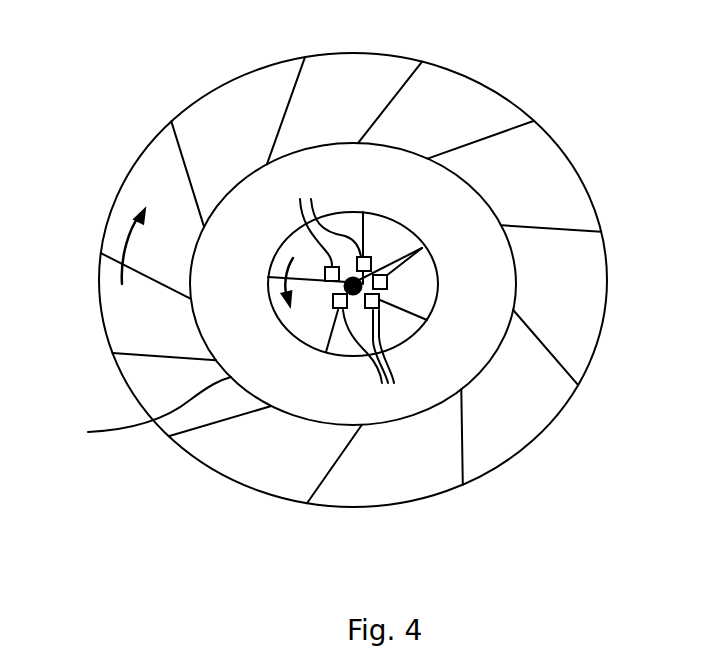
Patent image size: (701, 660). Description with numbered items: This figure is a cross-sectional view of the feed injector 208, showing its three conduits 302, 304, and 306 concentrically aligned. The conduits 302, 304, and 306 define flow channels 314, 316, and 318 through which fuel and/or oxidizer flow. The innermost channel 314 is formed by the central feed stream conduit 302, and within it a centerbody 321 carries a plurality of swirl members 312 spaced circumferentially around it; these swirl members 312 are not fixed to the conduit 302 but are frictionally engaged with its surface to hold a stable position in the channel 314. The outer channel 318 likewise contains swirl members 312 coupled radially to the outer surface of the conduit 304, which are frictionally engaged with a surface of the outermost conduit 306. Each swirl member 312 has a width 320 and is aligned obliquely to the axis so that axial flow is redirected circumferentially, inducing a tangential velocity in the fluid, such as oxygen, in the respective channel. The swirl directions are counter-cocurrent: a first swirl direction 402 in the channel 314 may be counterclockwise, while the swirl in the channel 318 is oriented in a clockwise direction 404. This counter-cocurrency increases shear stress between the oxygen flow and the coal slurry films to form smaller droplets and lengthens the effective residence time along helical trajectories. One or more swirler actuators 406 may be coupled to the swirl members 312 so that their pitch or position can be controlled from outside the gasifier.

The feed injector 208 is at (84, 101).
The central feed stream conduit 302 is at (326, 352).
The conduit 304 is at (135, 415).
The conduit 306 is at (216, 471).
The swirl members 312 is at (574, 372).
The flow channel 314 is at (352, 225).
The flow channel 316 is at (272, 348).
The flow channel 318 is at (278, 68).
The width 320 is at (422, 248).
The centerbody 321 is at (367, 278).
The first swirl direction 402 is at (262, 283).
The clockwise direction 404 is at (123, 247).
The swirler actuator 406 is at (346, 292).